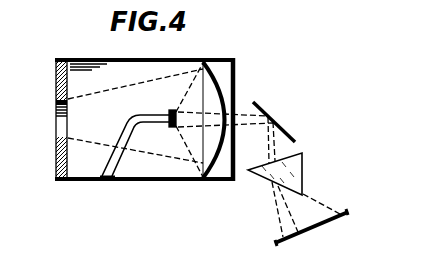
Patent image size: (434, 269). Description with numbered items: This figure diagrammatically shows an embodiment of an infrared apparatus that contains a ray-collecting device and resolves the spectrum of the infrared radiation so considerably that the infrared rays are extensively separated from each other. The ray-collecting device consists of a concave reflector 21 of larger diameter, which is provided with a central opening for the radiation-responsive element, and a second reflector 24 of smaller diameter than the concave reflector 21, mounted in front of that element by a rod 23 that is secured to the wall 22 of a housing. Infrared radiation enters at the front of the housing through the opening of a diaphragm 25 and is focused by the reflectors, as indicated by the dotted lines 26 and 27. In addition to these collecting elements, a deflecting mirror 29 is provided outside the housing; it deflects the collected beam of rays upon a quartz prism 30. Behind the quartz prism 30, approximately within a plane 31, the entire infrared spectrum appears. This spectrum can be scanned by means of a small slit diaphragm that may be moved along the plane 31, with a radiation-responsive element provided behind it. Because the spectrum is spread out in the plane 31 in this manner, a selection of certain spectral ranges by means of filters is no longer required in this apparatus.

The concave reflector 21 is at (215, 80).
The wall of a housing 22 is at (165, 181).
The rod 23 is at (132, 136).
The second reflector 24 is at (169, 114).
The diaphragm 25 is at (55, 82).
The dotted line 26 is at (115, 88).
The dotted line 27 is at (98, 145).
The deflecting mirror 29 is at (265, 105).
The quartz prism 30 is at (302, 168).
The plane 31 is at (308, 230).